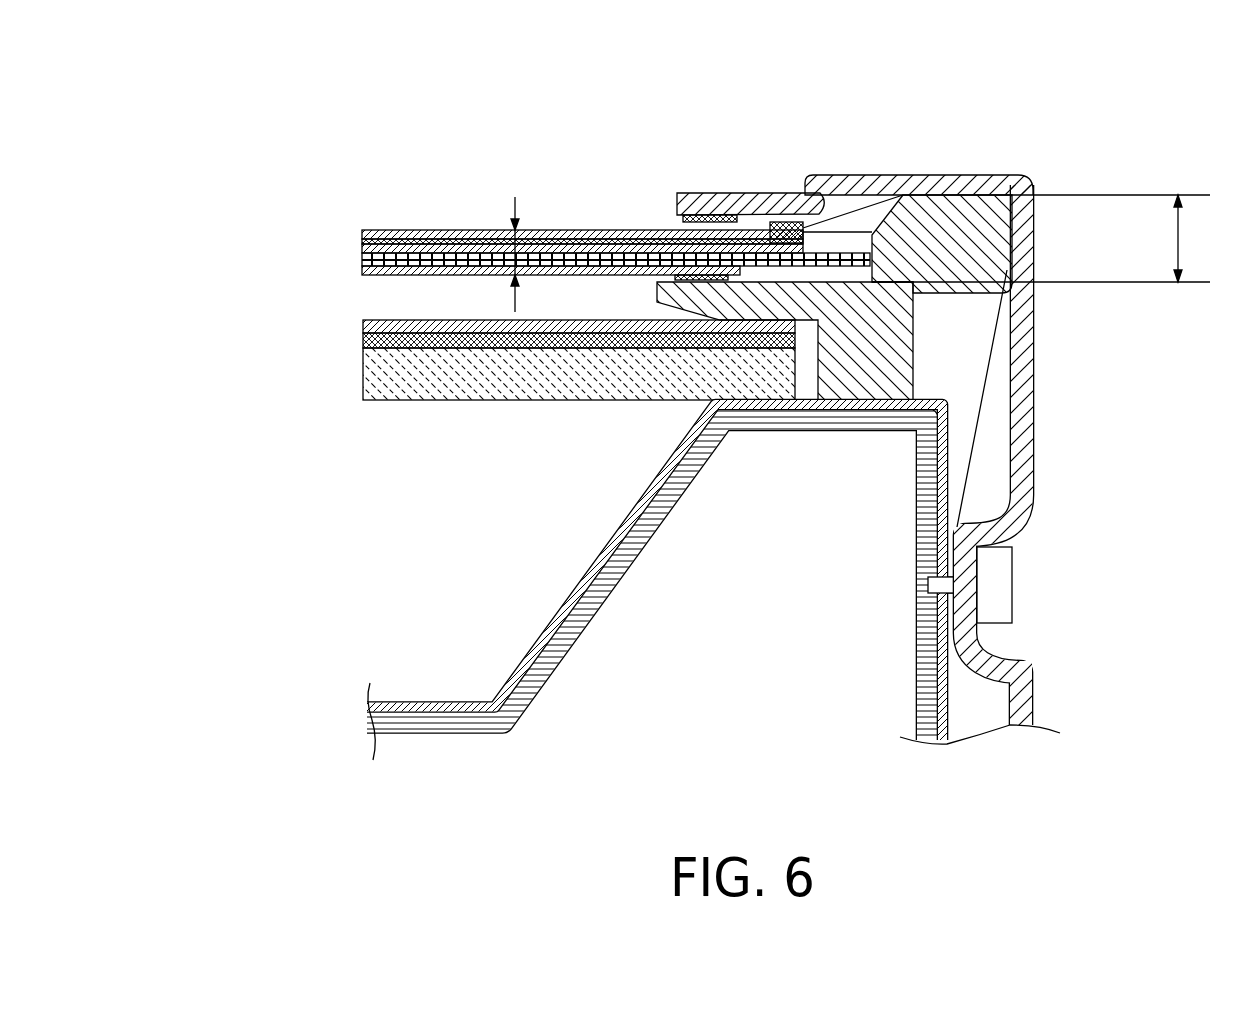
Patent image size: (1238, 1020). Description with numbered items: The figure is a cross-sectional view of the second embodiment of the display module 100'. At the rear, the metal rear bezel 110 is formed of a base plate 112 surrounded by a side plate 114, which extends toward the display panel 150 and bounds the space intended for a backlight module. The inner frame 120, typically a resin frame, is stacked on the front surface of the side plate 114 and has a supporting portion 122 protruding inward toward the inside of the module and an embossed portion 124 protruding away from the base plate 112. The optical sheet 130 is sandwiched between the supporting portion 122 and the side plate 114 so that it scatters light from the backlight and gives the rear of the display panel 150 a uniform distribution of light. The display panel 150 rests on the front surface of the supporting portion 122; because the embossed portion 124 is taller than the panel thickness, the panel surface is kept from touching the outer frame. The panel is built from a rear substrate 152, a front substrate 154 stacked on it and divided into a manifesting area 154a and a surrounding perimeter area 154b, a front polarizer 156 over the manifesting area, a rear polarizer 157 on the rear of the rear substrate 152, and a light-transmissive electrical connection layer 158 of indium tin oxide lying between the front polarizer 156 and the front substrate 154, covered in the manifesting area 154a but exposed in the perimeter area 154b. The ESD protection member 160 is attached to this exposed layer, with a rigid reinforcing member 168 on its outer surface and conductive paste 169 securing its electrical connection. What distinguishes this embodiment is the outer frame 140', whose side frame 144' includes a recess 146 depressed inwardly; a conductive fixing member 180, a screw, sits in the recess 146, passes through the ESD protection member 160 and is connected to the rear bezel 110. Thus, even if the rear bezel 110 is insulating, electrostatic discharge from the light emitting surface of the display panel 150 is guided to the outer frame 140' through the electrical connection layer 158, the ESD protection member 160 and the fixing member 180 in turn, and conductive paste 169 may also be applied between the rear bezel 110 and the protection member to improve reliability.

The display module 100' is at (670, 460).
The rear bezel 110 is at (655, 648).
The base plate 112 is at (437, 723).
The side plate 114 is at (560, 647).
The inner frame 120 is at (845, 332).
The supporting portion 122 is at (745, 300).
The embossed portion 124 is at (903, 250).
The optical sheet 130 is at (350, 367).
The outer frame 140' is at (1101, 642).
The side frame 144' is at (1090, 697).
The recess 146 is at (1005, 632).
The display panel 150 is at (250, 78).
The rear substrate 152 is at (410, 258).
The front substrate 154 is at (425, 248).
The manifesting area 154a is at (575, 230).
The perimeter area 154b is at (717, 250).
The front polarizer 156 is at (440, 230).
The rear polarizer 157 is at (365, 270).
The electrical connection layer 158 is at (430, 240).
The ESD protection member 160 is at (994, 394).
The reinforcing member 168 is at (787, 222).
The conductive paste 169 is at (703, 216).
The fixing member 180 is at (1001, 578).